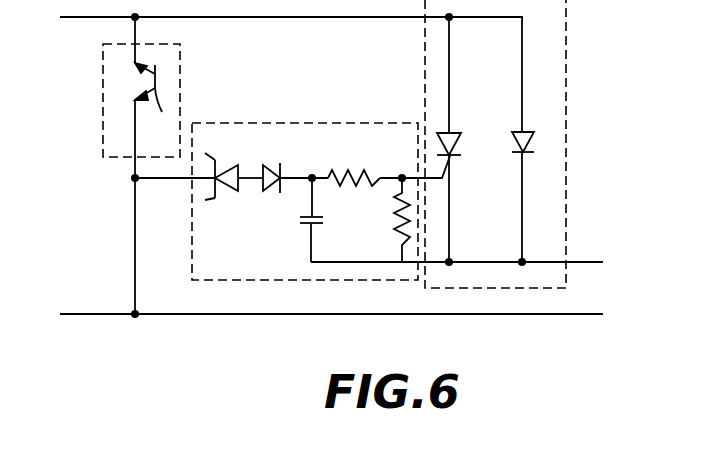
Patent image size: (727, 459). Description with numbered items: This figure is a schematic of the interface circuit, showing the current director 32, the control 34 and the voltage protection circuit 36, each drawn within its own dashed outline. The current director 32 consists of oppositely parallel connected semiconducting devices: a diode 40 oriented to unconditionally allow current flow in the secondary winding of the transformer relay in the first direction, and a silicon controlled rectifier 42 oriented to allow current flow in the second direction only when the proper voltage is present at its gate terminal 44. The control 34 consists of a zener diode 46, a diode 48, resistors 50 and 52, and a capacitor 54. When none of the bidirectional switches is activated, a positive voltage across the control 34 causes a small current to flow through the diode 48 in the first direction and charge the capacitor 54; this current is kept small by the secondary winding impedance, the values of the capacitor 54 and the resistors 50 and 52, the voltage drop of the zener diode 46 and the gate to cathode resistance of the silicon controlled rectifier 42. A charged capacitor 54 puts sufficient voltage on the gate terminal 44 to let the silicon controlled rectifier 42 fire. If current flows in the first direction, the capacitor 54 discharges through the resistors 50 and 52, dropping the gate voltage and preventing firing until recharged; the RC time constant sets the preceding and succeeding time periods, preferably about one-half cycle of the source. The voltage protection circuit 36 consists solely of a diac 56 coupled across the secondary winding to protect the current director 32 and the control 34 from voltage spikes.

The current director 32 is at (568, 97).
The control 34 is at (336, 122).
The voltage protection circuit 36 is at (181, 75).
The diode 40 is at (515, 140).
The silicon controlled rectifier 42 is at (457, 143).
The gate terminal 44 is at (440, 170).
The zener diode 46 is at (227, 198).
The diode 48 is at (272, 170).
The resistor 50 is at (348, 162).
The resistor 52 is at (397, 225).
The capacitor 54 is at (308, 230).
The diac 56 is at (154, 104).